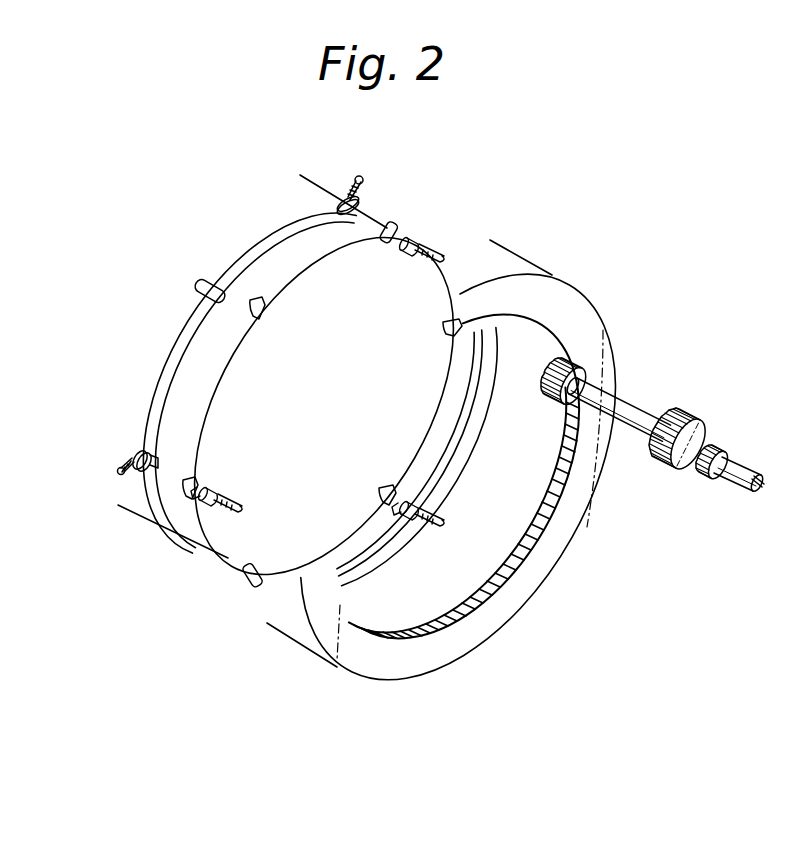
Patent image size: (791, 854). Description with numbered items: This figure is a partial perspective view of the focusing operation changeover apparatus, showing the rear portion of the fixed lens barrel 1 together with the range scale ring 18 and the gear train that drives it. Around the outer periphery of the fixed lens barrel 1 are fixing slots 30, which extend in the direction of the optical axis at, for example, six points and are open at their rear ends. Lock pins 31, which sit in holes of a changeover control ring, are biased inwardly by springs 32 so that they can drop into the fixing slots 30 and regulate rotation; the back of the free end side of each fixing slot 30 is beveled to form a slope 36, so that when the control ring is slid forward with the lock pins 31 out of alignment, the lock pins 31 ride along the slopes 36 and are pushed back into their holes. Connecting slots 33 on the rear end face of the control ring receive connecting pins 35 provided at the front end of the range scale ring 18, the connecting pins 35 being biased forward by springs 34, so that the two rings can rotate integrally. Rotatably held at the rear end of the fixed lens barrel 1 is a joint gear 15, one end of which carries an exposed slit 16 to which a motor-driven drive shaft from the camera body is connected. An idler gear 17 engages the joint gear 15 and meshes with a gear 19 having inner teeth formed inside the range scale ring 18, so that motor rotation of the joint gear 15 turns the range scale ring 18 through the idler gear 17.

The fixed lens barrel 1 is at (150, 357).
The joint gear 15 is at (727, 467).
The slit 16 is at (760, 493).
The idler gear 17 is at (640, 410).
The range scale ring 18 is at (520, 268).
The gear having inner teeth 19 is at (560, 500).
The fixing slots 30 is at (383, 227).
The lock pins 31 is at (362, 200).
The springs 32 is at (350, 186).
The connecting slots 33 is at (257, 297).
The springs 34 is at (240, 507).
The connecting pins 35 is at (207, 510).
The slope 36 is at (190, 333).